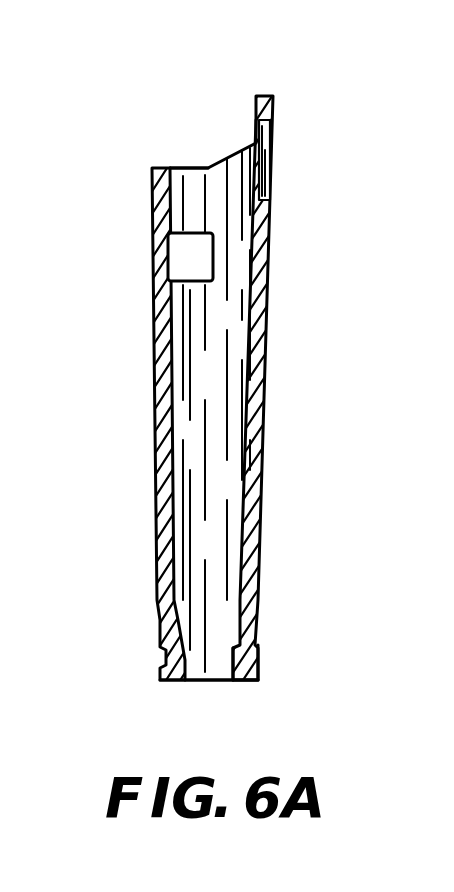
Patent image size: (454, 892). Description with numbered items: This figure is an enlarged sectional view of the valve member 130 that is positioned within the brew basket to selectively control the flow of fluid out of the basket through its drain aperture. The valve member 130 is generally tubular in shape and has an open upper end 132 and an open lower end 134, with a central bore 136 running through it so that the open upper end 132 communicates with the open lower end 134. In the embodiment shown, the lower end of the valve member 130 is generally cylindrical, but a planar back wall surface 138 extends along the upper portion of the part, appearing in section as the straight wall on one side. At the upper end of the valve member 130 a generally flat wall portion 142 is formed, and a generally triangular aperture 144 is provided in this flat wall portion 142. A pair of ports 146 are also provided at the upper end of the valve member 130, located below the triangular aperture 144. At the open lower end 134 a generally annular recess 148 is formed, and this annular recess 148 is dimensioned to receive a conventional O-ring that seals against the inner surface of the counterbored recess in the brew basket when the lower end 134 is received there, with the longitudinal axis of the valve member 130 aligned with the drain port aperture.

The valve member 130 is at (320, 100).
The open upper end 132 is at (185, 166).
The open lower end 134 is at (218, 682).
The central bore 136 is at (216, 452).
The planar back wall surface 138 is at (270, 330).
The flat wall portion 142 is at (273, 116).
The triangular aperture 144 is at (271, 164).
The ports 146 is at (184, 258).
The annular recess 148 is at (250, 657).